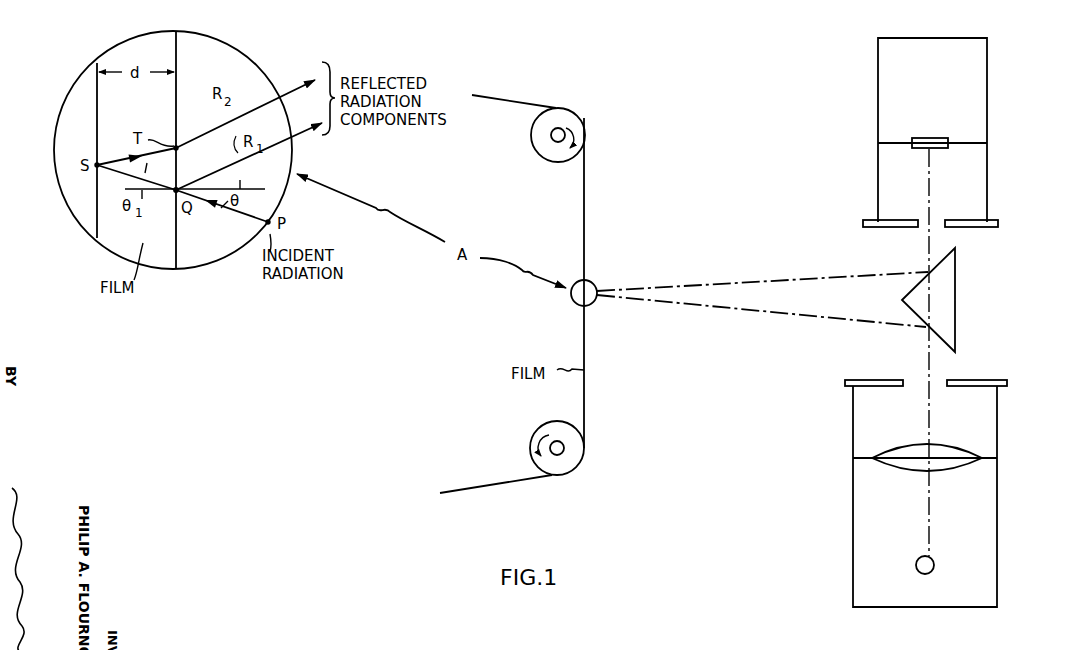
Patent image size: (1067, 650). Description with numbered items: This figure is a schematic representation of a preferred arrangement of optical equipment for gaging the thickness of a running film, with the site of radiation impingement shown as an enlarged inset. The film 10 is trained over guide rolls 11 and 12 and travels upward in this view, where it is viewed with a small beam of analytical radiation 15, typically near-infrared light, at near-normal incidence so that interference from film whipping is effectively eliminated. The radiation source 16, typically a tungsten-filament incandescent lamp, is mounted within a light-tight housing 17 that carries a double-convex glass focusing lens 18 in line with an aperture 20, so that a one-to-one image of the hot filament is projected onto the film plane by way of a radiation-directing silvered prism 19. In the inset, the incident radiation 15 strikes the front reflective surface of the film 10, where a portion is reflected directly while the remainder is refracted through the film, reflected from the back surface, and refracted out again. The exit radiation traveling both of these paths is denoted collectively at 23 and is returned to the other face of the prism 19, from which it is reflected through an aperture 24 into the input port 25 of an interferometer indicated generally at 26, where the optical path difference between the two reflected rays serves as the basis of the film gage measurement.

The film 10 is at (112, 108).
The guide roll 11 is at (540, 433).
The guide roll 12 is at (586, 137).
The analytical radiation beam 15 is at (728, 309).
The radiation source 16 is at (933, 562).
The light-tight housing 17 is at (853, 494).
The double-convex glass focusing lens 18 is at (910, 446).
The silvered prism 19 is at (941, 303).
The aperture 20 is at (910, 380).
The exit radiation 23 is at (720, 286).
The aperture 24 is at (920, 218).
The input port 25 is at (938, 150).
The interferometer 26 is at (945, 113).